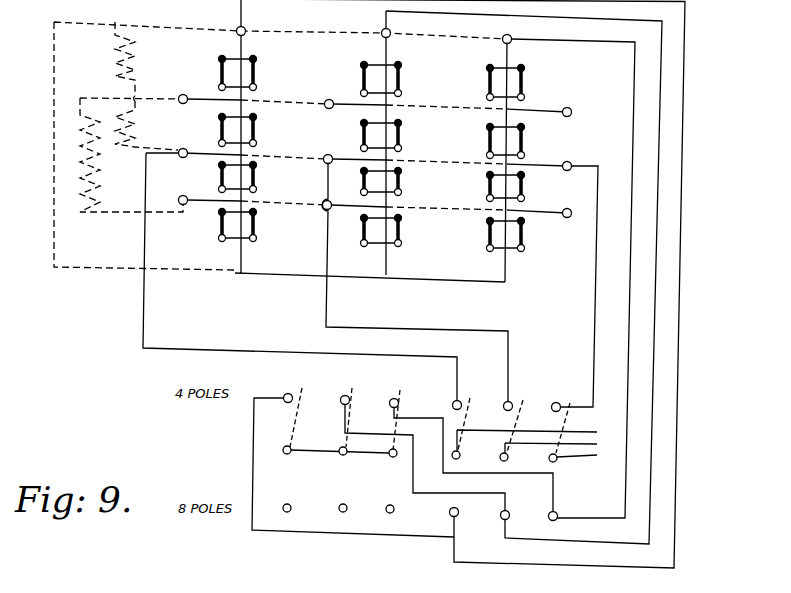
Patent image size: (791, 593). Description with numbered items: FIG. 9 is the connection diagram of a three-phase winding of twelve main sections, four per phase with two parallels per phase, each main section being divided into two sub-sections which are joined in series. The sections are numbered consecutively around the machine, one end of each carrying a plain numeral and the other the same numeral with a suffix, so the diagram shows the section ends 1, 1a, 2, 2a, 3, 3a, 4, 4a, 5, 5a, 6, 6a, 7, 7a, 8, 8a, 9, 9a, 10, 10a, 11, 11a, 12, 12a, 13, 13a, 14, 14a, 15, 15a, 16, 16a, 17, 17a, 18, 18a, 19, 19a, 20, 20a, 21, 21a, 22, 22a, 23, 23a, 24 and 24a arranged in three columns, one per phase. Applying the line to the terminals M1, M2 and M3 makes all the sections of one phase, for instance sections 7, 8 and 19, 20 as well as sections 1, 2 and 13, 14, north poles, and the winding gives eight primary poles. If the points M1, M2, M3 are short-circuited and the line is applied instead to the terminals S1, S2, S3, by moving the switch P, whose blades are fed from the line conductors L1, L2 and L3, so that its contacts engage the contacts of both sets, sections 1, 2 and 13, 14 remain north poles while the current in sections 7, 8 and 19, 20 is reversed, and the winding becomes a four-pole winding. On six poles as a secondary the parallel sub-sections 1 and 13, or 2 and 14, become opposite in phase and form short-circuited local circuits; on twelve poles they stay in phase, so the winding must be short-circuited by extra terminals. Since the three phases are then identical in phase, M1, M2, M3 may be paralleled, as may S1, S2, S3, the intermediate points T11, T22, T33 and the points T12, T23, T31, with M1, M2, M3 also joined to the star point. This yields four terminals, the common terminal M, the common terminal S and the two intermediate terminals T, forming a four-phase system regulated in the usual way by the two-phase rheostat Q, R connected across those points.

The section end 1 is at (218, 238).
The section end 1a is at (214, 212).
The section end 2 is at (218, 189).
The section end 2a is at (214, 165).
The section end 3 is at (360, 148).
The section end 3a is at (356, 123).
The section end 4 is at (360, 93).
The section end 4a is at (356, 65).
The section end 5 is at (526, 248).
The section end 5a is at (529, 221).
The section end 6 is at (526, 198).
The section end 6a is at (529, 175).
The section end 7 is at (218, 143).
The section end 7a is at (214, 117).
The section end 8 is at (218, 87).
The section end 8a is at (214, 59).
The section end 9 is at (360, 243).
The section end 9a is at (356, 218).
The section end 10 is at (356, 192).
The section end 10a is at (352, 171).
The section end 11 is at (529, 155).
The section end 11a is at (532, 127).
The section end 12 is at (529, 97).
The section end 12a is at (532, 68).
The section end 13 is at (261, 238).
The section end 13a is at (264, 212).
The section end 14 is at (261, 189).
The section end 14a is at (264, 165).
The section end 15 is at (406, 148).
The section end 15a is at (409, 123).
The section end 16 is at (406, 93).
The section end 16a is at (409, 65).
The section end 17 is at (482, 248).
The section end 17a is at (478, 221).
The section end 18 is at (482, 198).
The section end 18a is at (478, 175).
The section end 19 is at (261, 143).
The section end 19a is at (264, 117).
The section end 20 is at (261, 87).
The section end 20a is at (264, 59).
The section end 21 is at (406, 243).
The section end 21a is at (409, 218).
The section end 22 is at (406, 192).
The section end 22a is at (409, 171).
The section end 23 is at (482, 155).
The section end 23a is at (478, 127).
The section end 24 is at (482, 97).
The section end 24a is at (478, 68).
The common terminal M is at (280, 138).
The line terminal M1 is at (461, 284).
The line terminal M2 is at (502, 277).
The line terminal M3 is at (513, 278).
The rheostat Q is at (146, 86).
The rheostat R is at (131, 155).
The intermediate terminal T is at (64, 154).
The common terminal S is at (126, 149).
The intermediate point T11 is at (160, 92).
The intermediate point T12 is at (200, 194).
The intermediate point T22 is at (313, 97).
The intermediate point T23 is at (313, 212).
The intermediate point T31 is at (481, 221).
The intermediate point T33 is at (488, 107).
The line terminal S1 is at (309, 292).
The line terminal S2 is at (422, 296).
The line terminal S3 is at (552, 300).
The pole switch P is at (383, 476).
The line lead L1 is at (530, 434).
The line lead L2 is at (554, 443).
The line lead L3 is at (580, 454).